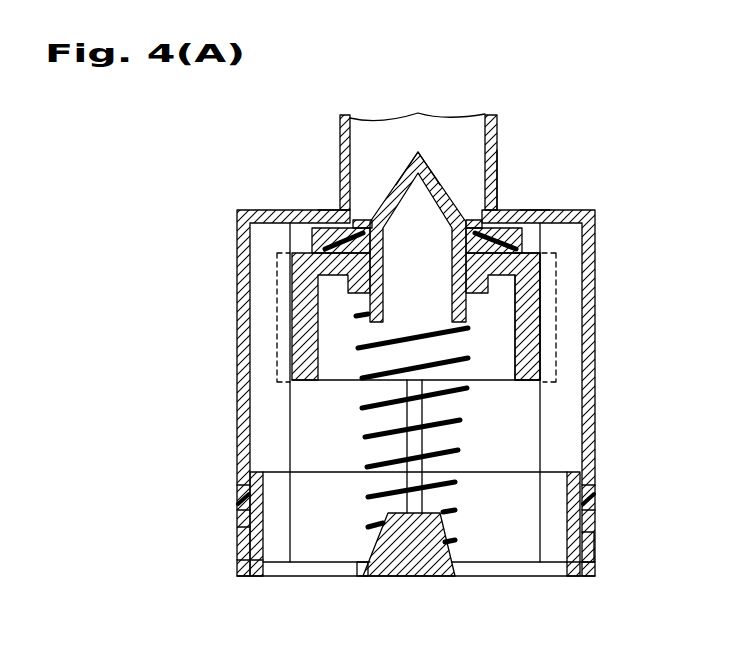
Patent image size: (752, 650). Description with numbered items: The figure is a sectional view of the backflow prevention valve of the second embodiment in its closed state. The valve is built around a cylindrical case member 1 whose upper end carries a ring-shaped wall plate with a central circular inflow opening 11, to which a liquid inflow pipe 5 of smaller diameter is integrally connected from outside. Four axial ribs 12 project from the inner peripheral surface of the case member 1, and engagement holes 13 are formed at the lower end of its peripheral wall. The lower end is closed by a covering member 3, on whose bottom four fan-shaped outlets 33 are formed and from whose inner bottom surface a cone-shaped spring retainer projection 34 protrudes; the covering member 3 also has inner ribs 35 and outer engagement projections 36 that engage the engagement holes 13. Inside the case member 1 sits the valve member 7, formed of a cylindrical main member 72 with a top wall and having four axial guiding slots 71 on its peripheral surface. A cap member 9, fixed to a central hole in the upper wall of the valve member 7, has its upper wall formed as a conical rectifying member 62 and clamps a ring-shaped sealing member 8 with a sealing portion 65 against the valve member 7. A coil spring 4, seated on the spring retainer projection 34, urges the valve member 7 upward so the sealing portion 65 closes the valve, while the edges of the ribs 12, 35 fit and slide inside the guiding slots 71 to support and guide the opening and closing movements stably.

The case member 1 is at (237, 213).
The covering member 3 is at (252, 574).
The coil spring 4 is at (462, 420).
The liquid inflow pipe 5 is at (497, 137).
The valve member 7 is at (545, 374).
The sealing member 8 is at (505, 248).
The cap member 9 is at (396, 186).
The inflow opening 11 is at (498, 210).
The ribs 12 is at (273, 262).
The engagement holes 13 is at (245, 487).
The outlets 33 is at (302, 570).
The spring retainer projection 34 is at (418, 568).
The ribs 35 is at (278, 518).
The engagement projections 36 is at (236, 497).
The rectifying member 62 is at (418, 152).
The sealing portion 65 is at (333, 210).
The guiding slots 71 is at (277, 330).
The cylindrical main member 72 is at (530, 325).